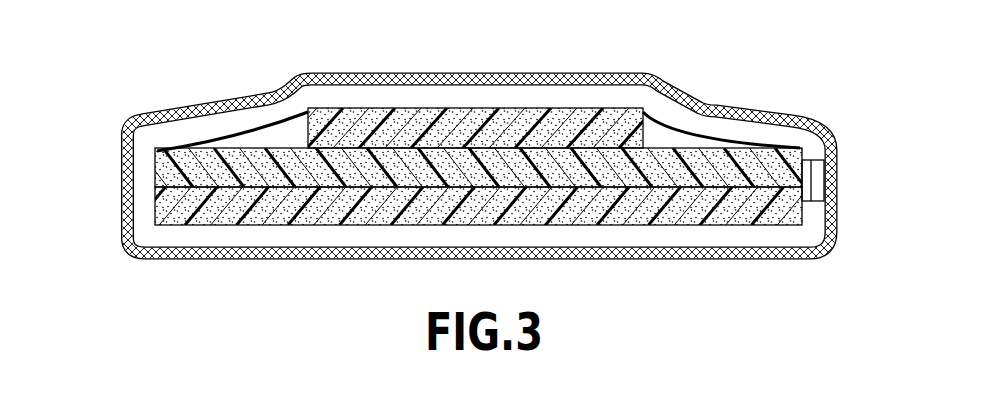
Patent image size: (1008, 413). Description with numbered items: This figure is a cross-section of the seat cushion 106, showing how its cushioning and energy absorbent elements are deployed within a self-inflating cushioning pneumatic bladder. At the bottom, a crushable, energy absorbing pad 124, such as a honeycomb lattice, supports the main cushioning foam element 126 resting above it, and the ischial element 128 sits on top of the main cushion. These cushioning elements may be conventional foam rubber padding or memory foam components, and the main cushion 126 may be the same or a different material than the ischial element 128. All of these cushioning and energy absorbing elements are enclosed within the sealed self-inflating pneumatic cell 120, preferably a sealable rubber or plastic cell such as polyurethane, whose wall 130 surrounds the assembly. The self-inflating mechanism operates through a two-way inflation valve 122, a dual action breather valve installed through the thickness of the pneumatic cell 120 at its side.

The seat cushion 106 is at (160, 66).
The sealed self-inflating pneumatic cell 120 is at (540, 102).
The two-way inflation valve 122 is at (808, 180).
The crushable energy absorbing pad 124 is at (645, 225).
The main cushioning foam element 126 is at (273, 147).
The ischial element 128 is at (404, 108).
The outer shell 130 is at (615, 74).